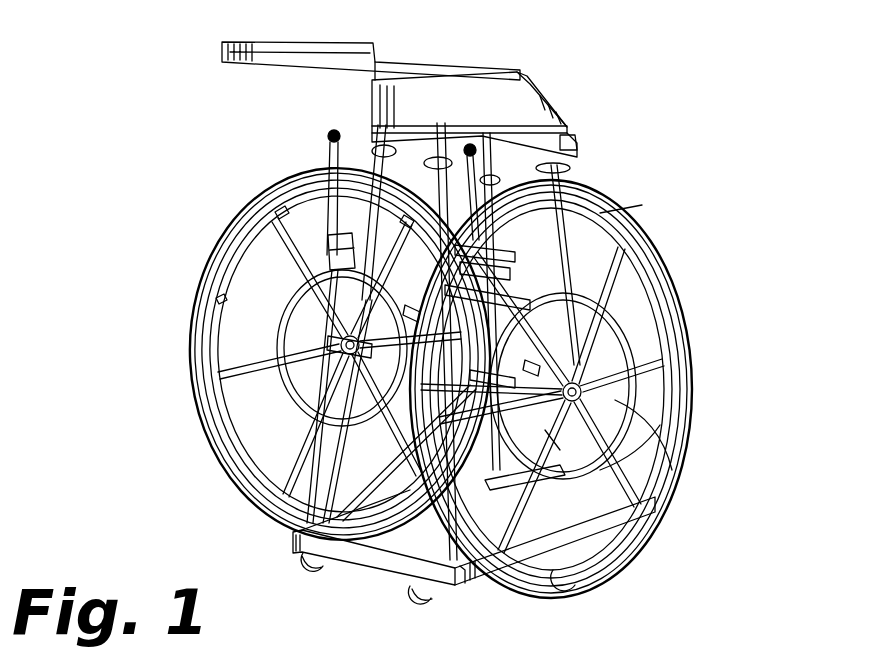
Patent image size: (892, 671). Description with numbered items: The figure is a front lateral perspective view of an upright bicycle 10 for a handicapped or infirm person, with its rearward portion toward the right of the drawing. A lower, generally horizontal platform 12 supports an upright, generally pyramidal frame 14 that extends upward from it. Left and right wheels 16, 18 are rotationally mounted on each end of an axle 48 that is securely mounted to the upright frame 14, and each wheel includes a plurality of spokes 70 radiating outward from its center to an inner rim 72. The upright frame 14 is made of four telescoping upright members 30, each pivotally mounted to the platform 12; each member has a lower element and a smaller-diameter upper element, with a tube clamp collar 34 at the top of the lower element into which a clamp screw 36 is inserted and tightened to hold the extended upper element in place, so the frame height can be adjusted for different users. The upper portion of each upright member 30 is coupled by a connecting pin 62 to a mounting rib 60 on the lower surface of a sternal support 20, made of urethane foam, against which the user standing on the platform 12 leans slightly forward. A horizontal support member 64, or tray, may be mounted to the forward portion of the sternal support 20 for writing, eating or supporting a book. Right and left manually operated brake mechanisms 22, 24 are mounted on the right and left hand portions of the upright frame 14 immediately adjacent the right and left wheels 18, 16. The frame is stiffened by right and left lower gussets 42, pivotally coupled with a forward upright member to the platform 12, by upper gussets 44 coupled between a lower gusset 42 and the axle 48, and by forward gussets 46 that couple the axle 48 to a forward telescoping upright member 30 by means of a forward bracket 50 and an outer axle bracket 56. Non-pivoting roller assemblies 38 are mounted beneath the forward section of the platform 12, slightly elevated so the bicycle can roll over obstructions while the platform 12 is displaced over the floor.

The upright bicycle 10 is at (157, 282).
The platform 12 is at (402, 537).
The upright frame 14 is at (577, 252).
The left wheel 16 is at (683, 313).
The right wheel 18 is at (247, 217).
The sternal support 20 is at (540, 88).
The right brake mechanism 22 is at (325, 148).
The left brake mechanism 24 is at (500, 252).
The telescoping upright member 30 is at (497, 182).
The tube clamp collar 34 is at (487, 140).
The clamp screw 36 is at (420, 157).
The roller assembly 38 is at (410, 594).
The lower gusset 42 is at (357, 467).
The upper gusset 44 is at (542, 430).
The forward gusset 46 is at (297, 405).
The axle 48 is at (495, 378).
The forward bracket 50 is at (335, 345).
The outer axle bracket 56 is at (410, 310).
The mounting rib 60 is at (370, 123).
The connecting pin 62 is at (577, 143).
The horizontal support member 64 is at (220, 48).
The spokes 70 is at (640, 395).
The inner rim 72 is at (683, 337).